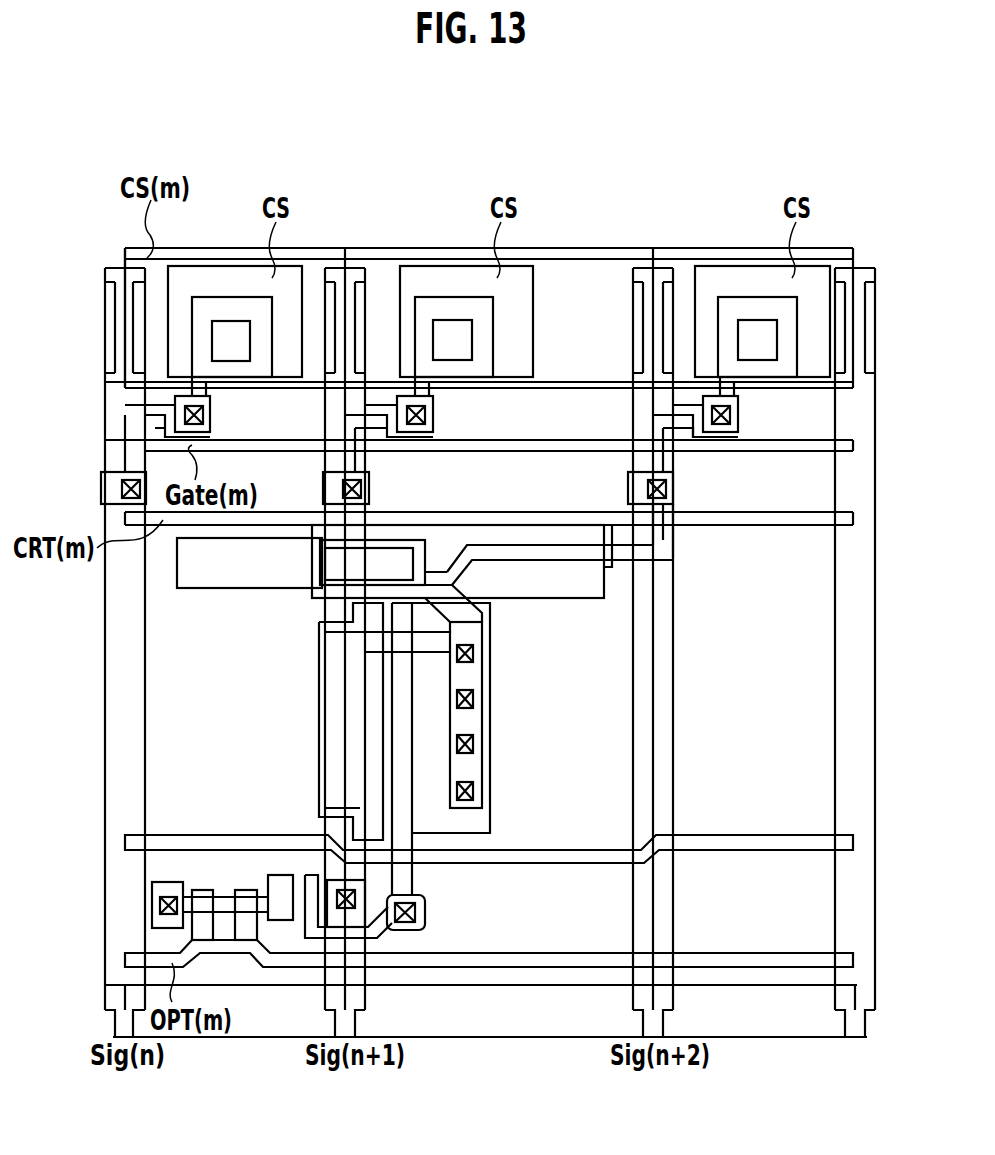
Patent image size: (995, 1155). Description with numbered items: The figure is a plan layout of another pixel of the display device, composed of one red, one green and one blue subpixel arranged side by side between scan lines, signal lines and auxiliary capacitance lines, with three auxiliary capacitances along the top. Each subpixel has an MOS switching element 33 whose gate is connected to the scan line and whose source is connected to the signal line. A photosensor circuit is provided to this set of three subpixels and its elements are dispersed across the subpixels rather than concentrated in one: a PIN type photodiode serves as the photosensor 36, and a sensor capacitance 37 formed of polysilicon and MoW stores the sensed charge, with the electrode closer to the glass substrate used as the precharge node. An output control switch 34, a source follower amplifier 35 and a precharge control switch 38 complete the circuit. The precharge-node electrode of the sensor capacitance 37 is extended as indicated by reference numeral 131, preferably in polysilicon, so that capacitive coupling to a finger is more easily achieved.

The switching element 33 is at (683, 430).
The output control switch 34 is at (228, 913).
The source follower amplifier 35 is at (308, 905).
The photosensor 36 is at (425, 642).
The sensor capacitance 37 is at (347, 570).
The precharge control switch 38 is at (620, 562).
The extended electrode of the precharge node 131 is at (322, 590).